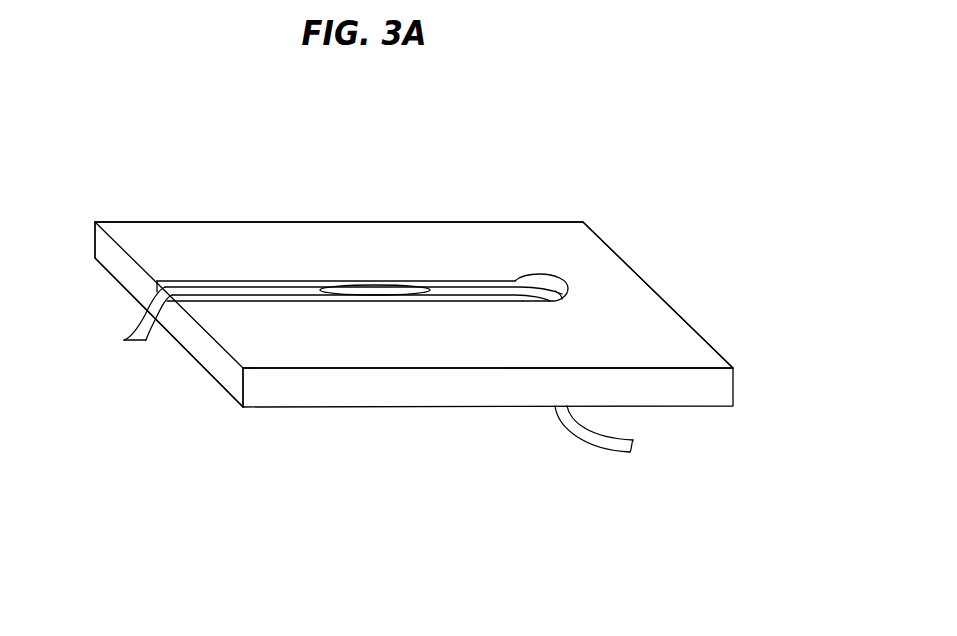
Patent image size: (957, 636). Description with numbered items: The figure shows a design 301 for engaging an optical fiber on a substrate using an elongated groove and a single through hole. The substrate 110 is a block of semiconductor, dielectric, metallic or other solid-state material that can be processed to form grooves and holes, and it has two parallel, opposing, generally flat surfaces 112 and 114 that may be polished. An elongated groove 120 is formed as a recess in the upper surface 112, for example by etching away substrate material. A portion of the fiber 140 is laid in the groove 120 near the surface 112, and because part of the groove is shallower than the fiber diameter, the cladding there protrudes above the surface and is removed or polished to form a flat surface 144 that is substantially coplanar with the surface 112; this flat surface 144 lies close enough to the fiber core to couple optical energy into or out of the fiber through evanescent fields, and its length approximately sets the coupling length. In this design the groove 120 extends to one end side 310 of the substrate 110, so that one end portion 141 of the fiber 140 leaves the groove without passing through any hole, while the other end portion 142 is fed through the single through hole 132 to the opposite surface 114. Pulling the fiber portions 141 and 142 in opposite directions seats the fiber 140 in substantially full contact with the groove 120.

The design 301 is at (547, 164).
The substrate 110 is at (93, 240).
The substrate surface 112 is at (132, 240).
The opposing substrate surface 114 is at (112, 278).
The elongated groove 120 is at (312, 275).
The through hole 132 is at (568, 292).
The fiber 140 is at (500, 295).
The flat surface 144 is at (376, 285).
The fiber end portion 141 is at (132, 332).
The fiber end portion 142 is at (620, 450).
The end side of substrate 310 is at (184, 330).